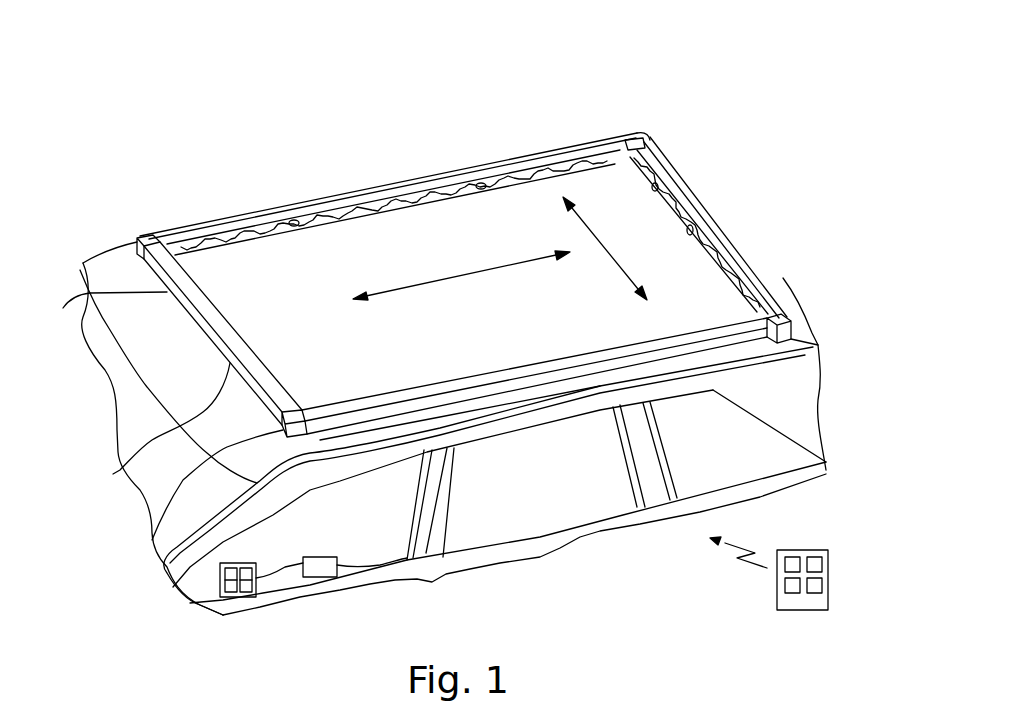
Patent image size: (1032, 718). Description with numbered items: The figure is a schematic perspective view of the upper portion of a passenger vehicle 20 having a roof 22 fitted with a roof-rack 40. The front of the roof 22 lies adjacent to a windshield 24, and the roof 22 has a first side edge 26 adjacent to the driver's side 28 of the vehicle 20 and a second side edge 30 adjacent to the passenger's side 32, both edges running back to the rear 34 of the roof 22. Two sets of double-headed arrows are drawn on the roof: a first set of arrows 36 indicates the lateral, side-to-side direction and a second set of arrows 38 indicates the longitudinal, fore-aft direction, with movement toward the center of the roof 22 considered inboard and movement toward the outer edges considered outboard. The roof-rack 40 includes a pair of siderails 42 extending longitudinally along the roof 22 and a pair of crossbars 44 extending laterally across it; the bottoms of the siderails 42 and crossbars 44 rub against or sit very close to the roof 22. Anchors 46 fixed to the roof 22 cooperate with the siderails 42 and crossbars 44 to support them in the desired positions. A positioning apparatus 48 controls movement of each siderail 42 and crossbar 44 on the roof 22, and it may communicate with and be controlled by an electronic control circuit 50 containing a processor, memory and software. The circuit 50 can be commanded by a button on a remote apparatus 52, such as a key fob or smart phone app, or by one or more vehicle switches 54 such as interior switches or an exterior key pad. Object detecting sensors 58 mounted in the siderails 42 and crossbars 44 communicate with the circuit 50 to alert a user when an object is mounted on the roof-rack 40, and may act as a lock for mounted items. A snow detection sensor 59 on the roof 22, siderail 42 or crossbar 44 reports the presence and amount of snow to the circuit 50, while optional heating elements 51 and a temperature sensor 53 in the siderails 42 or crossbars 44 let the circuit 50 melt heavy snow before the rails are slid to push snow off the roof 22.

The passenger vehicle 20 is at (140, 150).
The roof 22 is at (110, 250).
The windshield 24 is at (115, 428).
The first side edge 26 is at (497, 410).
The driver's side 28 is at (577, 477).
The second side edge 30 is at (305, 198).
The passenger's side 32 is at (527, 127).
The rear 34 is at (724, 218).
The first set of arrows 36 is at (767, 300).
The second set of arrows 38 is at (447, 277).
The roof-rack 40 is at (113, 474).
The siderails 42 is at (604, 139).
The crossbars 44 is at (96, 314).
The anchors 46 is at (650, 130).
The positioning apparatus 48 is at (112, 217).
The electronic control circuit 50 is at (362, 571).
The heating elements 51 is at (360, 207).
The remote apparatus 52 is at (793, 610).
The temperature sensor 53 is at (653, 184).
The vehicle switches 54 is at (238, 597).
The object detecting sensors 58 is at (477, 182).
The snow detection sensor 59 is at (286, 222).